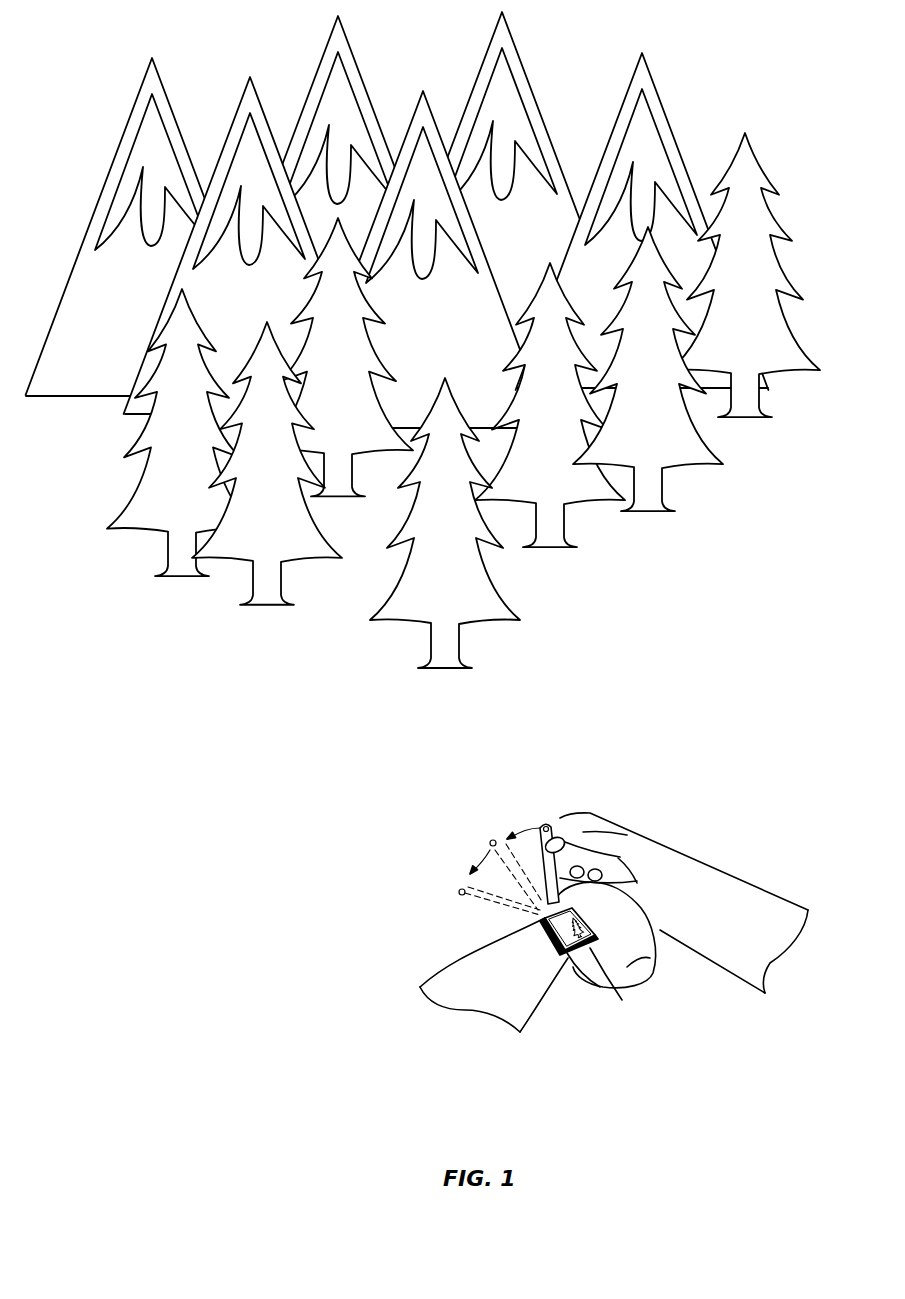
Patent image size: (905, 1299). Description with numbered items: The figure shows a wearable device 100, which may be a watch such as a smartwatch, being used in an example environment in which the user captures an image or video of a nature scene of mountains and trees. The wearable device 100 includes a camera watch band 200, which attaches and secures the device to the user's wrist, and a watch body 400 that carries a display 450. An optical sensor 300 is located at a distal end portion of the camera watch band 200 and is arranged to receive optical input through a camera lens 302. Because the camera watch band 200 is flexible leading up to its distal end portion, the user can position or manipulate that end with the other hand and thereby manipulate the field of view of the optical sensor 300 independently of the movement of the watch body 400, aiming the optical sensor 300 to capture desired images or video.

The wearable device 100 is at (556, 987).
The camera watch band 200 is at (590, 965).
The optical sensor 300 is at (549, 822).
The camera lens 302 is at (540, 827).
The watch body 400 is at (543, 920).
The display 450 is at (596, 937).